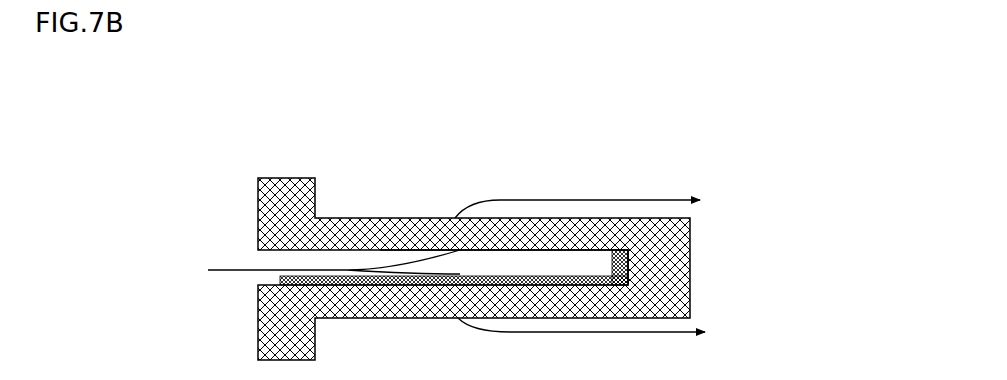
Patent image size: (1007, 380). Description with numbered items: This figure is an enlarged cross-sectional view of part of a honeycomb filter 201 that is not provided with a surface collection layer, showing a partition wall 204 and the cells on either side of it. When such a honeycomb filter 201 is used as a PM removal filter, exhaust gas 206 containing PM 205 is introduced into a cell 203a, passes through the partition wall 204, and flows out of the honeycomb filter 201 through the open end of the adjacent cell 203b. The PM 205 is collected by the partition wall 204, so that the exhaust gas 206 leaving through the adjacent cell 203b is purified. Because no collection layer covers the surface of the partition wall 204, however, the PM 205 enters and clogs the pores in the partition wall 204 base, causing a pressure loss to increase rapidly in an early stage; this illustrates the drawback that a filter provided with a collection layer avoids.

The honeycomb filter 201 is at (681, 158).
The cell 203a is at (578, 262).
The adjacent cell 203b is at (421, 175).
The partition wall 204 is at (422, 218).
The PM 205 is at (513, 261).
The exhaust gas 206 is at (218, 268).